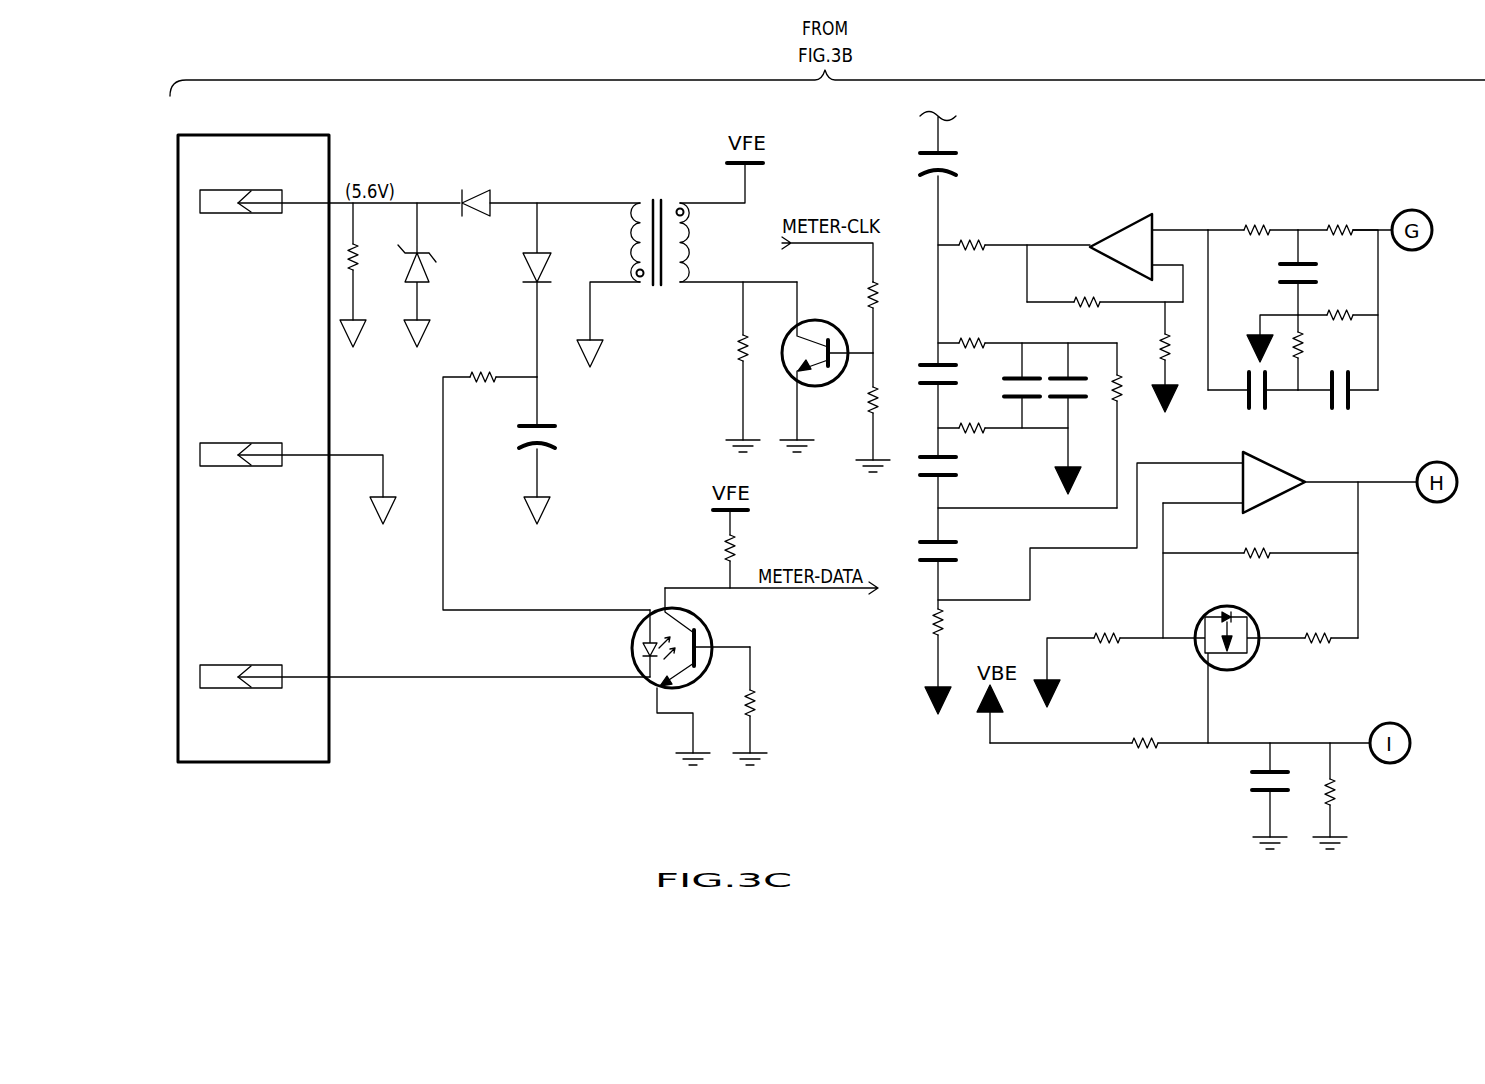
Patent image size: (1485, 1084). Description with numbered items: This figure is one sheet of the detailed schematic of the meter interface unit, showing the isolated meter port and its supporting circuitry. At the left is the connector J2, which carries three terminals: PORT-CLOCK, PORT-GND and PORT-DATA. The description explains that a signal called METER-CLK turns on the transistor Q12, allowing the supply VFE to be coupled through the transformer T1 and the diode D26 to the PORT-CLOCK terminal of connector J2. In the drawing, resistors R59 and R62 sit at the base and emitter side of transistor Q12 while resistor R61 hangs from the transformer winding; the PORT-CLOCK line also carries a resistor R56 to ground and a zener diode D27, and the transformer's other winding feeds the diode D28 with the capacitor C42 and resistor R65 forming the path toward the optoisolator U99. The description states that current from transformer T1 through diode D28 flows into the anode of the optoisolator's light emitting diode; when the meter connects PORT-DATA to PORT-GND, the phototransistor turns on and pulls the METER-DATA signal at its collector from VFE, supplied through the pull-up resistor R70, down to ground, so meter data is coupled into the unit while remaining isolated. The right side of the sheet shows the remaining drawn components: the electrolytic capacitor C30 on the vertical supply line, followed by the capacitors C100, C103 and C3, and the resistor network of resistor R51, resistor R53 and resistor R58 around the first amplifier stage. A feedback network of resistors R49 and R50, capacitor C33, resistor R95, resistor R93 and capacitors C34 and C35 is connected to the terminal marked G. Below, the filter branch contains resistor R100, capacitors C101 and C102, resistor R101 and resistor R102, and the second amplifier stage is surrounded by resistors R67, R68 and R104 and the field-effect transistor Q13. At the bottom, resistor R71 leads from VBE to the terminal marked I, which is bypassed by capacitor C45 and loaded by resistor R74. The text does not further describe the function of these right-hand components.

The connector J2 is at (414, 433).
The resistor 3.3K R56 is at (326, 275).
The diode D26 is at (478, 202).
The zener diode NBZ5232B D27 is at (454, 275).
The diode D28 is at (570, 290).
The transformer T1 is at (687, 260).
The resistor 1.8K R65 is at (546, 477).
The capacitor 4.7/20V C42 is at (571, 450).
The resistor 47K R61 is at (729, 367).
The transistor Q12 is at (825, 359).
The resistor 10K R59 is at (900, 313).
The resistor 3.3K R62 is at (888, 412).
The resistor 10K R70 is at (752, 549).
The optocoupler H11A1S U99 is at (648, 675).
The capacitor 1/50V C30 is at (906, 160).
The capacitor .1 C100 is at (954, 389).
The capacitor .1 C103 is at (914, 494).
The capacitor .0033 C3 is at (950, 556).
The resistor 270 R51 is at (1014, 246).
The resistor 2.7K R53 is at (1105, 304).
The resistor 10K R58 is at (1184, 357).
The resistor 5.1K R49 is at (1253, 230).
The resistor 5.1K R50 is at (1338, 230).
The capacitor .0068 C33 is at (1274, 272).
The resistor 100K R95 is at (1312, 322).
The resistor 2.7K R93 is at (1303, 376).
The capacitor .0033 C34 is at (1245, 406).
The capacitor .0033 C35 is at (1351, 383).
The resistor 1.5K R100 is at (1027, 318).
The capacitor .1 C101 is at (1031, 417).
The capacitor .1 C102 is at (1083, 418).
The resistor 620 R101 is at (1003, 454).
The resistor 1.3K R102 is at (1138, 425).
The resistor 220K R67 is at (1260, 574).
The resistor 10K R68 is at (1308, 664).
The resistor 4.7K R104 is at (1114, 646).
The MOSFET 2N7002 Q13 is at (1229, 674).
The resistor 10K R71 is at (1180, 743).
The capacitor .1 C45 is at (1245, 796).
The resistor 10K R74 is at (1347, 796).